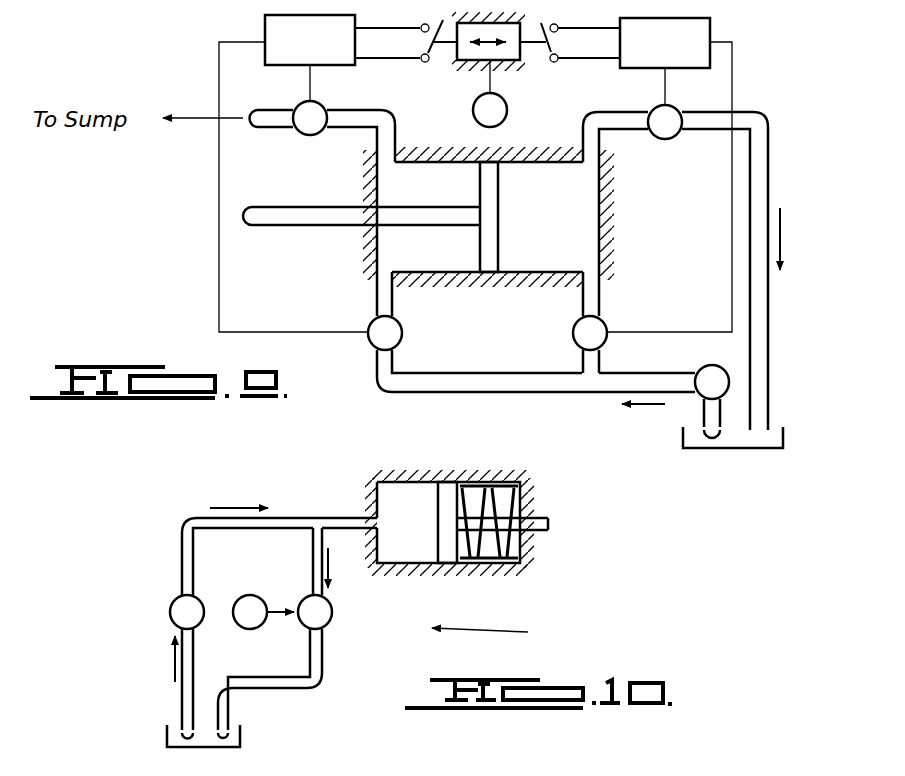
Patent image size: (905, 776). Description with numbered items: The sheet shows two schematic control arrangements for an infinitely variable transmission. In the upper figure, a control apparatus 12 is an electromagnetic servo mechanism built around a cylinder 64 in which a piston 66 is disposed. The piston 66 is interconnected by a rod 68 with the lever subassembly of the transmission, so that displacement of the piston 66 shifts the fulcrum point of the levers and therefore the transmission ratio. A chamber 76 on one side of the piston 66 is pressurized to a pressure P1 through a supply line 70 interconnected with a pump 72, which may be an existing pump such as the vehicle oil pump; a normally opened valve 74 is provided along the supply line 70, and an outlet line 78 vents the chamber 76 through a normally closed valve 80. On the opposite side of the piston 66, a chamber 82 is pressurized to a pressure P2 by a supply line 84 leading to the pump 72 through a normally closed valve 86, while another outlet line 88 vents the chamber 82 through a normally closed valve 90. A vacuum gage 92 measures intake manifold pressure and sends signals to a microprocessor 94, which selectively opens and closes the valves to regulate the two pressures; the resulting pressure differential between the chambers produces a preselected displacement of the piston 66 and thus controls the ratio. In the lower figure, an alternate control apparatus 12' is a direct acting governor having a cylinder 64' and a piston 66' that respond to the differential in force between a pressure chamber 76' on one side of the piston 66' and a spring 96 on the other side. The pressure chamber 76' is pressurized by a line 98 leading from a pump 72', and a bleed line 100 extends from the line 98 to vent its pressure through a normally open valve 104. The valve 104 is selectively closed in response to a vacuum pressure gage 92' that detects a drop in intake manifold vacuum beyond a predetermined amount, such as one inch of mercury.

In FIG. 9, the control apparatus 12 is at (748, 237).
In FIG. 9, the cylinder 64 is at (488, 184).
In FIG. 9, the piston 66 is at (513, 217).
In FIG. 9, the rod 68 is at (326, 213).
In FIG. 10, the rod 68 is at (548, 515).
In FIG. 9, the supply line 70 is at (600, 293).
In FIG. 9, the pump 72 is at (697, 390).
In FIG. 9, the normally opened valve 74 is at (573, 331).
In FIG. 9, the chamber 76 is at (547, 219).
In FIG. 9, the outlet line 78 is at (603, 118).
In FIG. 9, the normally closed valve 80 is at (665, 140).
In FIG. 9, the chamber 82 is at (435, 219).
In FIG. 9, the supply line 84 is at (377, 290).
In FIG. 9, the normally closed valve 86 is at (404, 333).
In FIG. 9, the outlet line 88 is at (386, 112).
In FIG. 9, the normally closed valve 90 is at (300, 133).
In FIG. 9, the vacuum gage 92 is at (487, 69).
In FIG. 9, the microprocessor 94 is at (487, 60).
In FIG. 10, the alternate control apparatus 12' is at (496, 640).
In FIG. 10, the cylinder 64' is at (443, 501).
In FIG. 10, the piston 66' is at (459, 545).
In FIG. 10, the pump 72' is at (165, 671).
In FIG. 10, the pressure chamber 76' is at (407, 525).
In FIG. 10, the vacuum pressure gage 92' is at (263, 629).
In FIG. 10, the spring 96 is at (486, 480).
In FIG. 10, the line 98 is at (279, 518).
In FIG. 10, the bleed line 100 is at (283, 693).
In FIG. 10, the normally open valve 104 is at (333, 627).